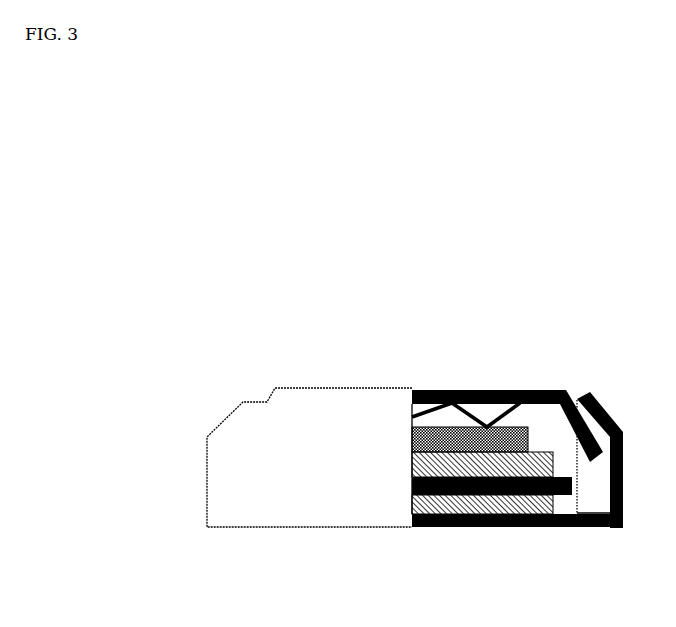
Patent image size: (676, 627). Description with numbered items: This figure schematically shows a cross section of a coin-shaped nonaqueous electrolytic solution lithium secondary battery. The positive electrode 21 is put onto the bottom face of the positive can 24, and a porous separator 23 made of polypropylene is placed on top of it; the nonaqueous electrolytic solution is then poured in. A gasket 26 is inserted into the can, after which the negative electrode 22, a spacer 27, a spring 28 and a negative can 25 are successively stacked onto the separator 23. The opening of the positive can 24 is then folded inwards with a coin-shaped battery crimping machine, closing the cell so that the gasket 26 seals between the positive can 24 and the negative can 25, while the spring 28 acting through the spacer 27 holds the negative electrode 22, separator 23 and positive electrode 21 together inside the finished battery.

The positive electrode 21 is at (403, 505).
The negative electrode 22 is at (403, 463).
The porous separator 23 is at (403, 485).
The positive can 24 is at (451, 538).
The negative can 25 is at (542, 382).
The gasket 26 is at (593, 506).
The spacer 27 is at (403, 440).
The spring 28 is at (496, 405).